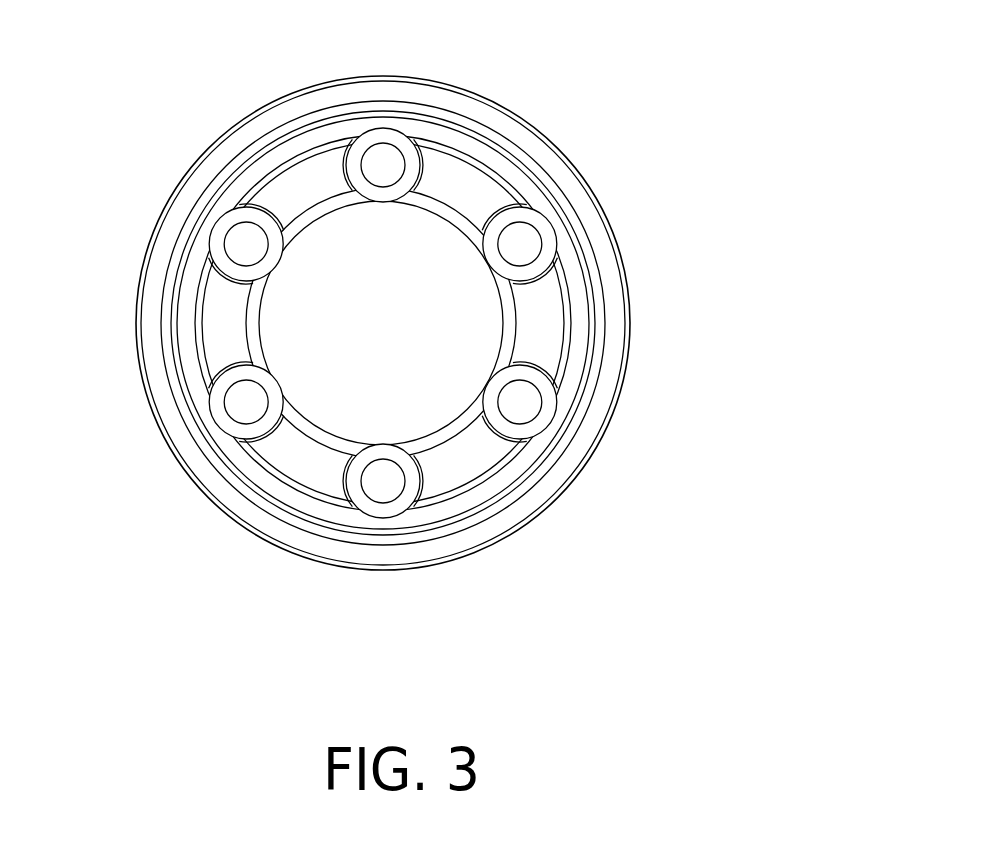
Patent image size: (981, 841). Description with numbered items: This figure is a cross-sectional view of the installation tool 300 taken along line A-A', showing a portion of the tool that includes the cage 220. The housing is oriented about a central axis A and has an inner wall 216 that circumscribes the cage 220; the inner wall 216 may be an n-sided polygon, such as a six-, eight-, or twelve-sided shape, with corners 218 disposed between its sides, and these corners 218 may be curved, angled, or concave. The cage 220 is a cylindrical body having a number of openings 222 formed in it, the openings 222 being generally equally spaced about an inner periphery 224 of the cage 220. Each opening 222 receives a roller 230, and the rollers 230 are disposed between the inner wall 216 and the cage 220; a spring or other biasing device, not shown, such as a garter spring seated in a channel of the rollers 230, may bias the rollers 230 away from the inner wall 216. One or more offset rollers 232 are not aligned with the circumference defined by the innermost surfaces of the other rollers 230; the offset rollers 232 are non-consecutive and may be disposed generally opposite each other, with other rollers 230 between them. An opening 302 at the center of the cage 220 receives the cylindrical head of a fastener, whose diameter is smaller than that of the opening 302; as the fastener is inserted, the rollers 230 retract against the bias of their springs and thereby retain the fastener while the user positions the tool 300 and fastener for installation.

The flange assembly 300 is at (578, 62).
The opening 302 is at (410, 385).
The inner wall 216 is at (190, 380).
The corners 218 is at (197, 407).
The cage 220 is at (283, 455).
The openings 222 is at (215, 282).
The inner periphery 224 is at (318, 207).
The rollers 230 is at (232, 232).
The offset rollers 232 is at (385, 155).
The central axis A is at (382, 335).